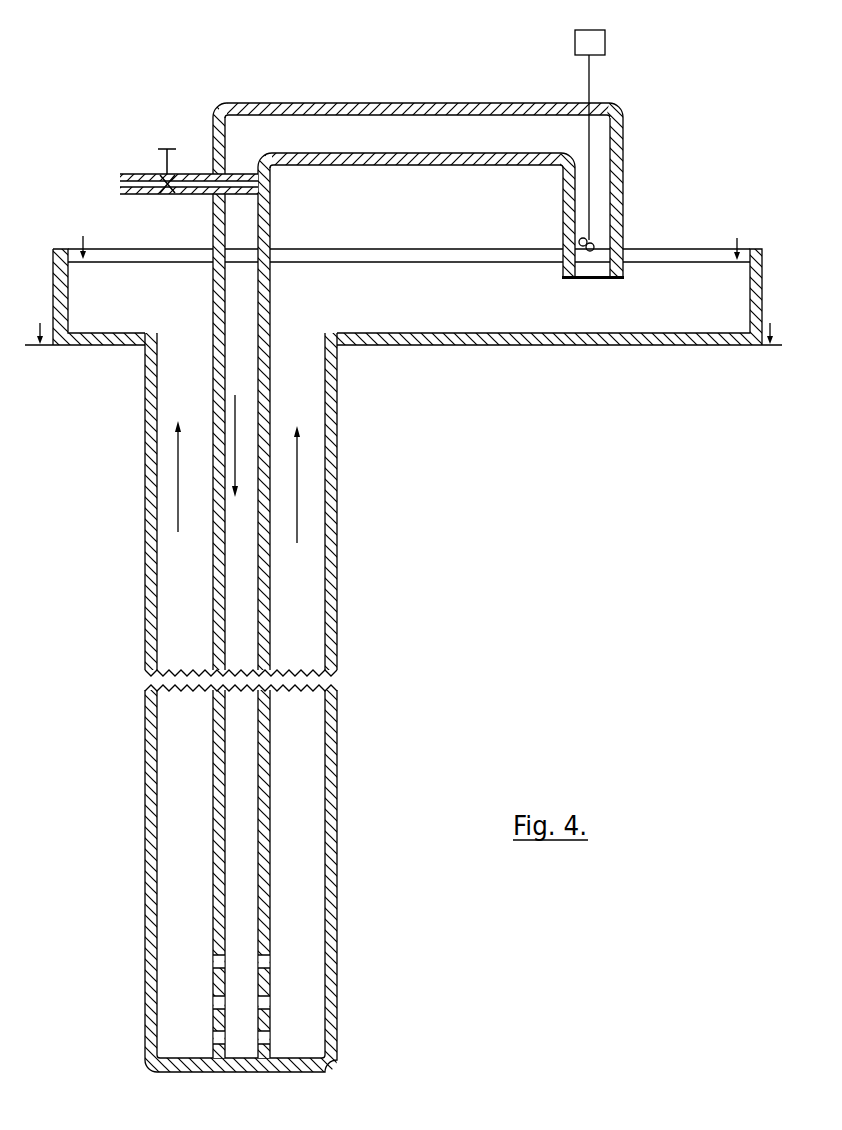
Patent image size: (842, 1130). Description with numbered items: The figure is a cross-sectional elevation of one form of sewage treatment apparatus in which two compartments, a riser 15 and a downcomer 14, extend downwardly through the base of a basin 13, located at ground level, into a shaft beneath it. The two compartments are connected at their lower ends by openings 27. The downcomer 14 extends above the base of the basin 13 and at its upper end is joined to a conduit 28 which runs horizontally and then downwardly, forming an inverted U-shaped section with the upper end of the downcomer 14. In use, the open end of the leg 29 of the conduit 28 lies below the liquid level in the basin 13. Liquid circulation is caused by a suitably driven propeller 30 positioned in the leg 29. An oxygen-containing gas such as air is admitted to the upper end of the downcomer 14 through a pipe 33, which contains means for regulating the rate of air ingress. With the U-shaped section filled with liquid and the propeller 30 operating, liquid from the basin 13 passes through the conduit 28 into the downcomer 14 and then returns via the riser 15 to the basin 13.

The basin 13 is at (592, 312).
The downcomer 14 is at (240, 565).
The riser 15 is at (307, 595).
The openings 27 is at (263, 1033).
The conduit 28 is at (333, 125).
The leg 29 is at (600, 208).
The propeller 30 is at (592, 77).
The pipe 33 is at (233, 173).